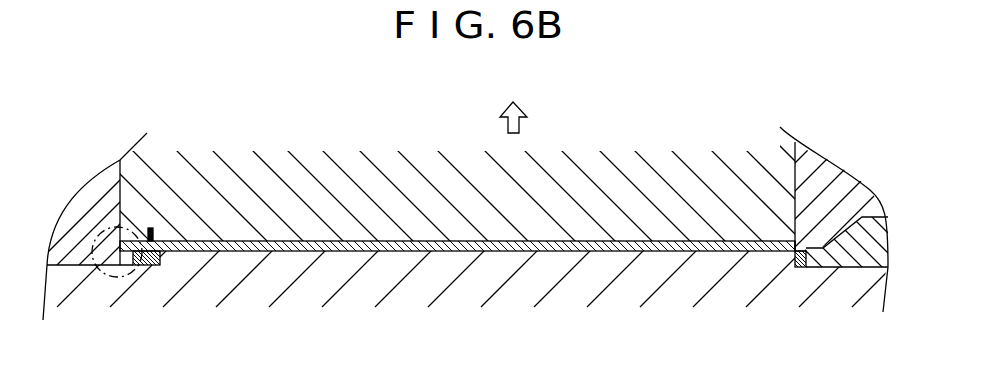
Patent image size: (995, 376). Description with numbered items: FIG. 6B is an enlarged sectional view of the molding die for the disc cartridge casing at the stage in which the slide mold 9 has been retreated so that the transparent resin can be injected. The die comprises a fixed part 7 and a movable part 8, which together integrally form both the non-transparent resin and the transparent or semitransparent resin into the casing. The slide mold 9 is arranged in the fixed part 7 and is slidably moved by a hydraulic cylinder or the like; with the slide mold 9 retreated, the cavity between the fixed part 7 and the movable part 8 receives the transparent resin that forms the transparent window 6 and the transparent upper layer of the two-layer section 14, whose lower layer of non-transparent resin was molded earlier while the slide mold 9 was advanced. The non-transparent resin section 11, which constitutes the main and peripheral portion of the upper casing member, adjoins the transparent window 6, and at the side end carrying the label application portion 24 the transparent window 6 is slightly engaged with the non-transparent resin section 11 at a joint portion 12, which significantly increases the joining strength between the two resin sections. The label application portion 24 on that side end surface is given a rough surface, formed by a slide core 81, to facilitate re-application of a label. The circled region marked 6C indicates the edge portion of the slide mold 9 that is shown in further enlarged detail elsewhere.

The transparent window 6 is at (568, 246).
The fixed part 7 is at (85, 198).
The movable part 8 is at (388, 270).
The slide mold 9 is at (600, 187).
The non-transparent resin section 11 is at (151, 266).
The joint portion 12 is at (787, 233).
The two-layer section 14 is at (150, 228).
The label application portion 24 is at (793, 267).
The slide core 81 is at (863, 258).
The detail view circle 6C is at (107, 275).